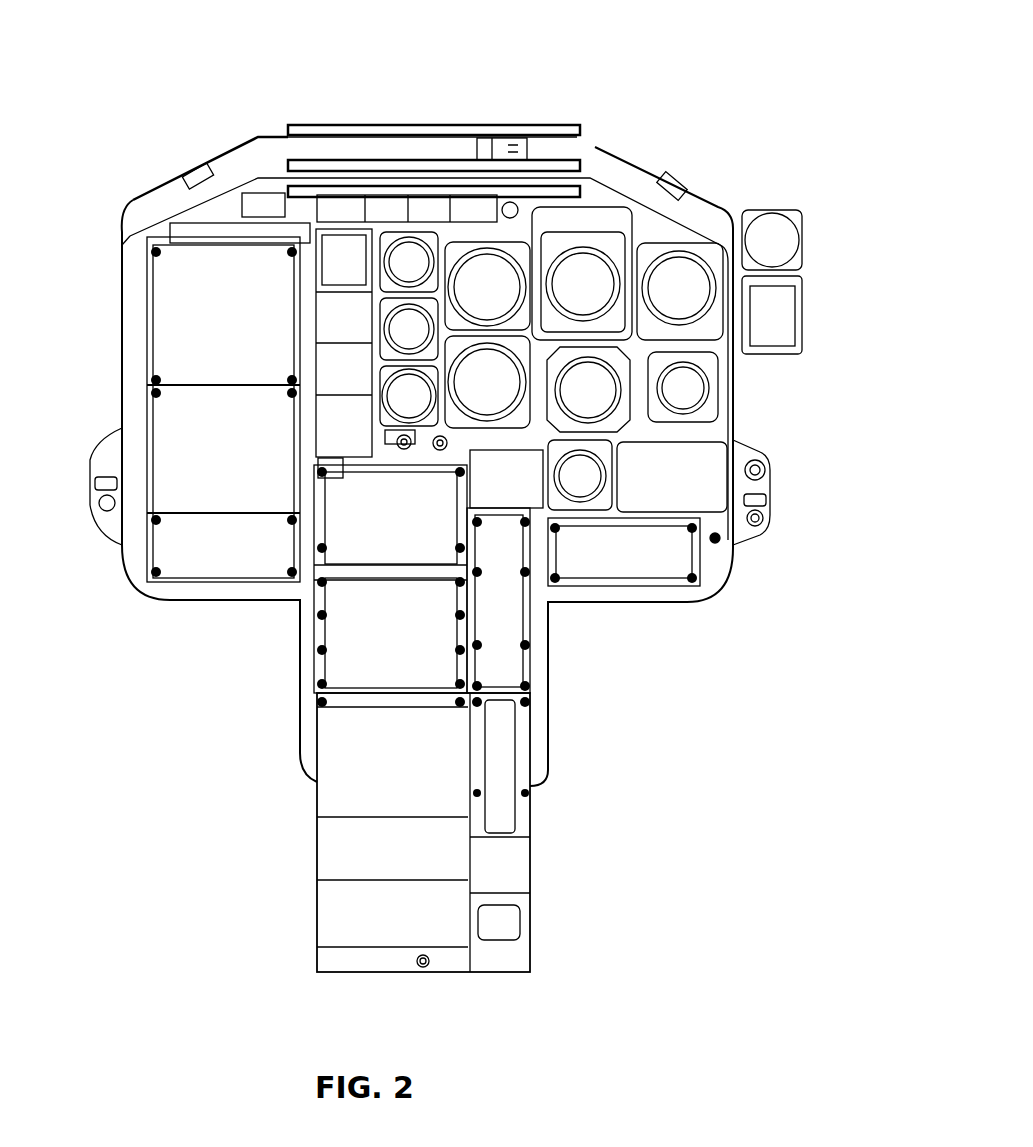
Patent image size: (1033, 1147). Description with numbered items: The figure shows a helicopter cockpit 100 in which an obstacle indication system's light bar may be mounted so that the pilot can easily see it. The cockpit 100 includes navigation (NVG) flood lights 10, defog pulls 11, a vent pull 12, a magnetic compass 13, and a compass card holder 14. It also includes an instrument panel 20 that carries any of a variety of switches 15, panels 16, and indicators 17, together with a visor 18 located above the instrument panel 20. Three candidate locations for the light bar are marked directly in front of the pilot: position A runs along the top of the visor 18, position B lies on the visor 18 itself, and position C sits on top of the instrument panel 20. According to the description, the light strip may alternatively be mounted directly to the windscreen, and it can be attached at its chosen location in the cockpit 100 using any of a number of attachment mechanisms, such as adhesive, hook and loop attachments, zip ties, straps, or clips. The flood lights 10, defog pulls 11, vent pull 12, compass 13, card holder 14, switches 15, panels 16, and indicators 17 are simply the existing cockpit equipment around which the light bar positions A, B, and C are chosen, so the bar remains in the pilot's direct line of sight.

The helicopter cockpit 100 is at (487, 491).
The navigation (NVG) flood lights 10 is at (198, 170).
The visor 18 is at (263, 153).
The position A is at (540, 128).
The position B is at (570, 165).
The position C is at (575, 190).
The magnetic compass 13 is at (778, 240).
The compass card holder 14 is at (782, 318).
The indicators 17 is at (640, 380).
The defog pulls 11 is at (104, 507).
The vent pull 12 is at (760, 518).
The switches 15 is at (717, 542).
The panels 16 is at (220, 547).
The instrument panel 20 is at (537, 647).